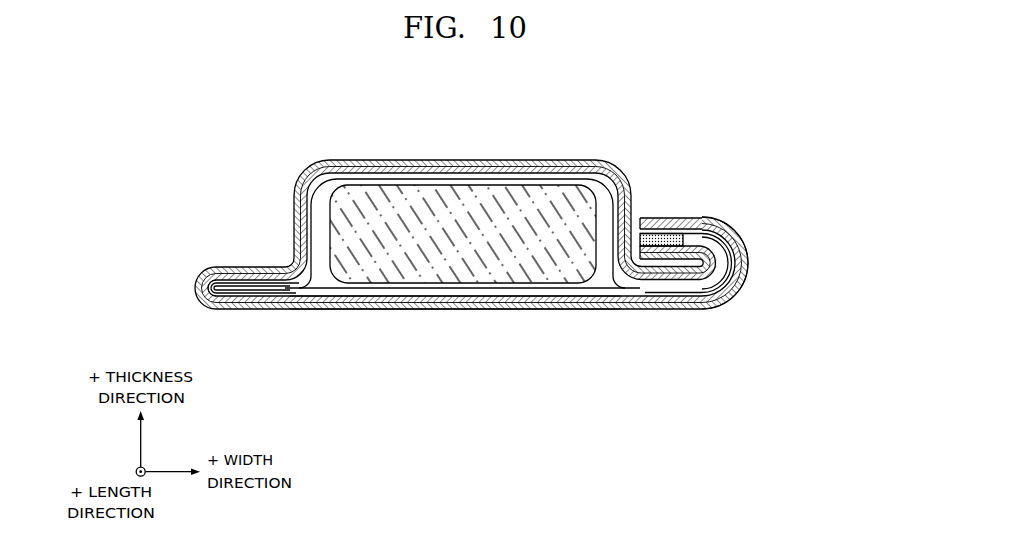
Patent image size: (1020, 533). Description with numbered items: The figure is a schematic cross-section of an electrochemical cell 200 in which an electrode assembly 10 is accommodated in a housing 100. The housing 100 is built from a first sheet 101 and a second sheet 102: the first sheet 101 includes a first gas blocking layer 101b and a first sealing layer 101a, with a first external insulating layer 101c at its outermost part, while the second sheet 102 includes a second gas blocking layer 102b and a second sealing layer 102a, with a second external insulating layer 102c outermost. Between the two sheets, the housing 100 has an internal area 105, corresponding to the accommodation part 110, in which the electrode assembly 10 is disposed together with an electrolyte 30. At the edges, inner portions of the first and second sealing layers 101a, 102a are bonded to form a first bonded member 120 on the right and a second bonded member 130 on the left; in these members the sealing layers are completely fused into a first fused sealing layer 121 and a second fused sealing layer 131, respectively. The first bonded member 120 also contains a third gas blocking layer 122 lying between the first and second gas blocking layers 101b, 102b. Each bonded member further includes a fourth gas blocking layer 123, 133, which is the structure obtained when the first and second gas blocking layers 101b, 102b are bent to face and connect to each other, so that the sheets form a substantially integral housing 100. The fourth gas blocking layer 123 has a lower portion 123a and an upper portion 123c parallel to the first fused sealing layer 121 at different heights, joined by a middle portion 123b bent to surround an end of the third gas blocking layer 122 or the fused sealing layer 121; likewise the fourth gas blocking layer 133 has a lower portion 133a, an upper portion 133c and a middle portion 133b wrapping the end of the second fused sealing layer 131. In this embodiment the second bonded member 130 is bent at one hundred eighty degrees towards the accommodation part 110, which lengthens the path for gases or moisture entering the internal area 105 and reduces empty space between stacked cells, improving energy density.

The electrochemical cell 200 is at (736, 115).
The housing 100 is at (368, 159).
The first sheet 101 is at (562, 104).
The first sealing layer 101a is at (433, 162).
The first gas blocking layer 101b is at (490, 169).
The first external insulating layer 101c is at (545, 176).
The electrode assembly 10 is at (578, 195).
The accommodation part 110 is at (302, 178).
The third gas blocking layer 122 is at (660, 233).
The upper portion of fourth gas blocking layer 123c is at (717, 221).
The middle portion of fourth gas blocking layer 123b is at (746, 260).
The fourth gas blocking layer 123 is at (822, 203).
The first fused sealing layer 121 is at (726, 267).
The lower portion of fourth gas blocking layer 123a is at (713, 309).
The second fused sealing layer 131 is at (250, 287).
The fourth gas blocking layer 133 is at (122, 255).
The upper portion of fourth gas blocking layer 133c is at (207, 270).
The middle portion of fourth gas blocking layer 133b is at (203, 289).
The lower portion of fourth gas blocking layer 133a is at (216, 309).
The second bonded member 130 is at (272, 310).
The internal area 105 is at (323, 290).
The second sealing layer 102a is at (433, 307).
The second gas blocking layer 102b is at (490, 301).
The second external insulating layer 102c is at (545, 294).
The second sheet 102 is at (565, 368).
The electrolyte 30 is at (603, 284).
The first bonded member 120 is at (662, 310).